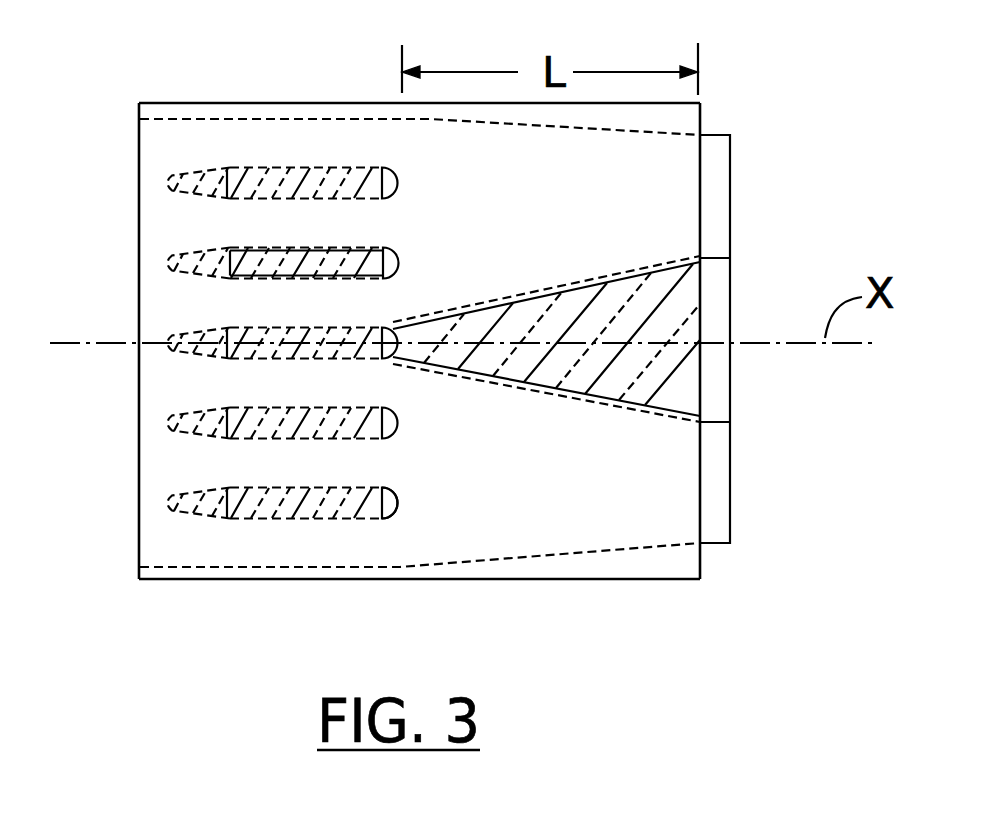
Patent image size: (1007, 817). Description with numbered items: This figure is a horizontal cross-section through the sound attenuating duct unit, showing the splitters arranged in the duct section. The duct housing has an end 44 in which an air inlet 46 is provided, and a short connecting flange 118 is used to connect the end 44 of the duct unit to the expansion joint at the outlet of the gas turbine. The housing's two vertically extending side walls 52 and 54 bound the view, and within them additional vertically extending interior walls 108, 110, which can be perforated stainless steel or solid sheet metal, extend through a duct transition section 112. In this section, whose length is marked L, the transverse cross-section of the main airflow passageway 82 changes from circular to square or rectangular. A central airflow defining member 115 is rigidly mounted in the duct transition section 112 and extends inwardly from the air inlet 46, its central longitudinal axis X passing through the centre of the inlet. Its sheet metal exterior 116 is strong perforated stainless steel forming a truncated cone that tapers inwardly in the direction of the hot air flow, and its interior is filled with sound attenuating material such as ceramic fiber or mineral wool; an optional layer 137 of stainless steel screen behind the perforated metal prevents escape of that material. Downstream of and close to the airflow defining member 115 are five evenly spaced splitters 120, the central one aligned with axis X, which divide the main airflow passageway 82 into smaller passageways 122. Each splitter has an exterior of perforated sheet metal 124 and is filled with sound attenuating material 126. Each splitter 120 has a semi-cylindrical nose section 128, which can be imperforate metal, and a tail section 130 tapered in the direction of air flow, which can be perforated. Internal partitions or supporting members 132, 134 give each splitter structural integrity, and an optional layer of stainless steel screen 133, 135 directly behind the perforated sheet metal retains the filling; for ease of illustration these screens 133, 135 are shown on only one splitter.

The end of duct housing 44 is at (705, 562).
The air inlet 46 is at (718, 215).
The side wall 52 is at (273, 582).
The side wall 54 is at (345, 103).
The main airflow passageway 82 is at (525, 216).
The interior wall 108 is at (505, 567).
The interior wall 110 is at (553, 127).
The duct transition section 112 is at (687, 113).
The central airflow defining member 115 is at (540, 390).
The sheet metal exterior 116 is at (447, 373).
The connecting flange 118 is at (720, 520).
The splitter 120 is at (222, 252).
The smaller passageway 122 is at (335, 401).
The perforated sheet metal 124 is at (283, 168).
The sound attenuating material 126 is at (240, 437).
The semi-cylindrical nose section 128 is at (398, 501).
The tail section 130 is at (190, 508).
The internal partition 132 is at (280, 262).
The stainless steel screen layer 133 is at (270, 248).
The internal partition 134 is at (412, 260).
The stainless steel screen layer 135 is at (288, 278).
The stainless steel screen layer 137 is at (563, 292).